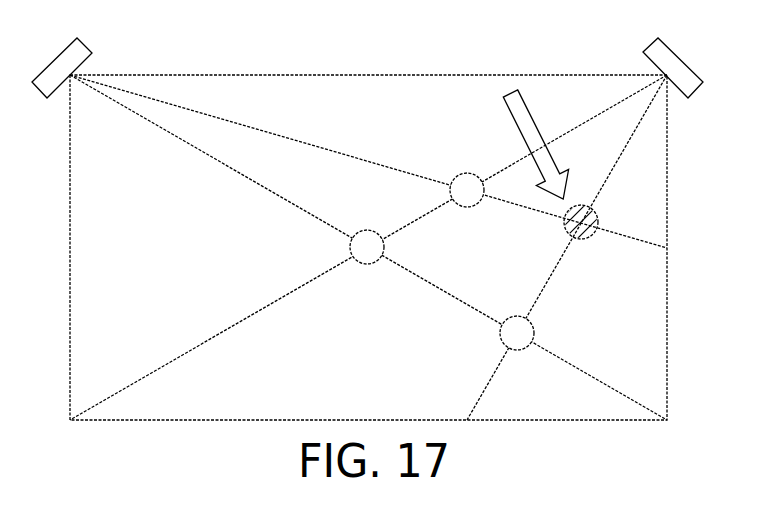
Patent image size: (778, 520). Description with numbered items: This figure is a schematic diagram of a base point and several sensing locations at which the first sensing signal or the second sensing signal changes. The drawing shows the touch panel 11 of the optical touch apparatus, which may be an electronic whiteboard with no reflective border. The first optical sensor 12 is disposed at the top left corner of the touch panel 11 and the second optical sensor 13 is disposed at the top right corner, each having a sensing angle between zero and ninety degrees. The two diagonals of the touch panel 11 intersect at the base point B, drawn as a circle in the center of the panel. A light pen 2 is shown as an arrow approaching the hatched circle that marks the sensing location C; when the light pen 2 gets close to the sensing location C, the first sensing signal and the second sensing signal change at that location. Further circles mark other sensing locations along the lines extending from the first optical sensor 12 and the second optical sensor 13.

The touch panel 11 is at (369, 75).
The first optical sensor 12 is at (57, 72).
The second optical sensor 13 is at (678, 72).
The light pen 2 is at (514, 118).
The base point B is at (370, 262).
The sensing location C is at (592, 215).